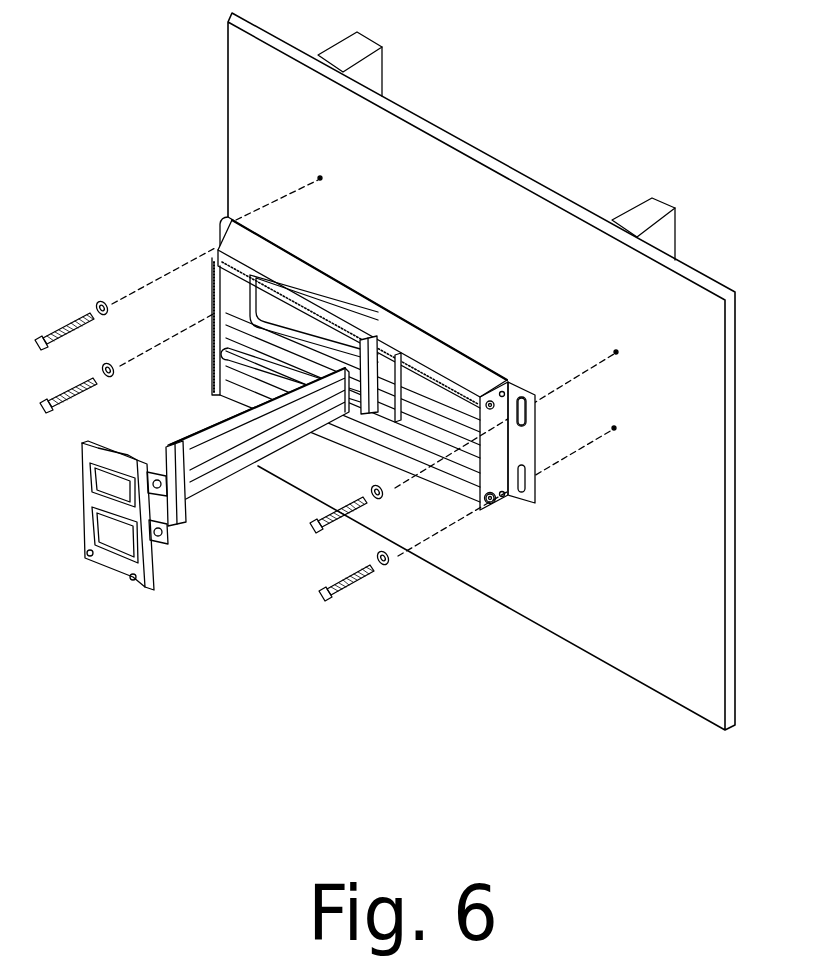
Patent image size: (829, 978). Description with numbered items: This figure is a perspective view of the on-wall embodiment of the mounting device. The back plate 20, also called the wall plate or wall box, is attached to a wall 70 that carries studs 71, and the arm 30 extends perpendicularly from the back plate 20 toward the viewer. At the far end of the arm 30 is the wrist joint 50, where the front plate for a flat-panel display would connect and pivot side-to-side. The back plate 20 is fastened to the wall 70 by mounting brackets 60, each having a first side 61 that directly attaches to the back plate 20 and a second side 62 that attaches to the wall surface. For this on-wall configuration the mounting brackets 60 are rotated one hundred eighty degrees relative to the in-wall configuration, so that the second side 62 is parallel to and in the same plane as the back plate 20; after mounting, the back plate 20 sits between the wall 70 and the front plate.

The back plate 20 is at (401, 318).
The arm 30 is at (270, 496).
The wrist joint 50 is at (128, 602).
The mounting bracket 60 is at (545, 532).
The first side 61 is at (490, 516).
The second side 62 is at (551, 428).
The wall 70 is at (505, 148).
The stud 71 is at (677, 205).